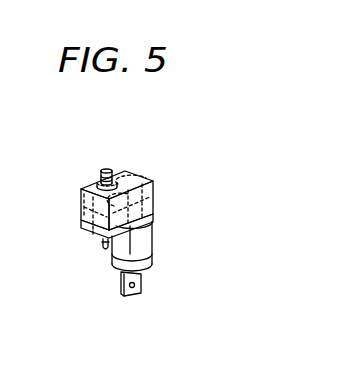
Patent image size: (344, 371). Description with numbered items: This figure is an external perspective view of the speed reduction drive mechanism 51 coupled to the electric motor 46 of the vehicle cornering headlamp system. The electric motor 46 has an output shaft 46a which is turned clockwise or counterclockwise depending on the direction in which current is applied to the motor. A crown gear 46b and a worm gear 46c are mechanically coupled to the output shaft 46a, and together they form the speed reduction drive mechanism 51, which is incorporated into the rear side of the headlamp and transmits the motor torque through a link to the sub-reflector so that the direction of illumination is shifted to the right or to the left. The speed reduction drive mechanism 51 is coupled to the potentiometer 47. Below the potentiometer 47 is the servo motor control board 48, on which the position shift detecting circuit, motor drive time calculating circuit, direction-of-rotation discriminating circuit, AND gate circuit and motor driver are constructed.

The speed reduction drive mechanism 51 is at (83, 166).
The electric motor 46 is at (147, 244).
The output shaft 46a is at (153, 208).
The crown gear 46b is at (138, 188).
The worm gear 46c is at (87, 204).
The potentiometer 47 is at (100, 214).
The servo motor control board 48 is at (103, 246).